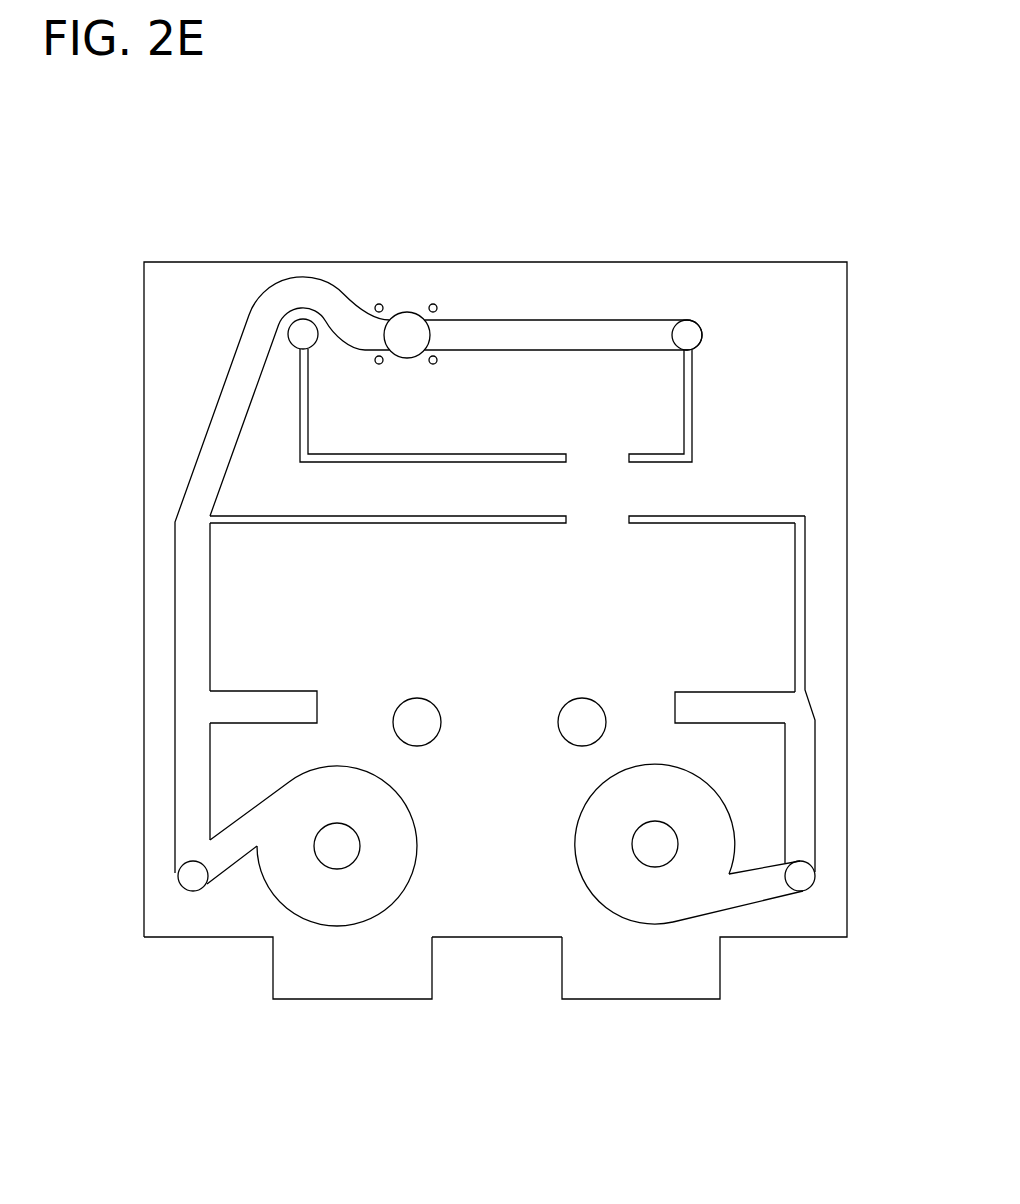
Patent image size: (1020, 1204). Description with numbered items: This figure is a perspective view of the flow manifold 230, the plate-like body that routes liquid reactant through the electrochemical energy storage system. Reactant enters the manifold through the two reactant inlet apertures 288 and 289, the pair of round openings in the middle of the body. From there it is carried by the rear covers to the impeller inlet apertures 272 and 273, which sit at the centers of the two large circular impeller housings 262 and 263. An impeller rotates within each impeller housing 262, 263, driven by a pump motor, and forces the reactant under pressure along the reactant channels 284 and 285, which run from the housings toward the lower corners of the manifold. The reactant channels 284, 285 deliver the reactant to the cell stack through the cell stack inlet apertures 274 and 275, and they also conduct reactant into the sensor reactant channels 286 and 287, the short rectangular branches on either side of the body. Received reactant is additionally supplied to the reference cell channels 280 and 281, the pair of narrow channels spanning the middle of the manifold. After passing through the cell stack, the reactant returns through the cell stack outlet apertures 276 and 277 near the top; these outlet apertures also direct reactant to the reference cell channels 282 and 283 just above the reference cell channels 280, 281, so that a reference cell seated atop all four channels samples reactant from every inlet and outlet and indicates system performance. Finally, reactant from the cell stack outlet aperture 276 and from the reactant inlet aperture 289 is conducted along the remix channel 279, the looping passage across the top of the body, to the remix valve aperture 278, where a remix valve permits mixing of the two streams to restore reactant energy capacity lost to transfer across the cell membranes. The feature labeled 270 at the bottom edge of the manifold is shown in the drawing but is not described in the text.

The flow manifold 230 is at (467, 564).
The bottom notch 270 is at (500, 998).
The remix channel 279 is at (392, 551).
The remix valve aperture 278 is at (459, 288).
The cell stack outlet aperture 277 is at (334, 370).
The cell stack outlet aperture 276 is at (716, 364).
The reference cell channel 283 is at (433, 405).
The reference cell channel 282 is at (627, 406).
The reference cell channel 281 is at (388, 495).
The reference cell channel 280 is at (684, 495).
The sensor reactant channel 287 is at (278, 685).
The sensor reactant channel 286 is at (735, 686).
The reactant inlet aperture 289 is at (447, 694).
The reactant inlet aperture 288 is at (612, 694).
The impeller housing 263 is at (374, 839).
The impeller inlet aperture 273 is at (297, 811).
The impeller housing 262 is at (612, 844).
The impeller inlet aperture 272 is at (692, 811).
The reactant channel 285 is at (243, 896).
The cell stack inlet aperture 275 is at (146, 913).
The reactant channel 284 is at (752, 918).
The cell stack inlet aperture 274 is at (846, 912).